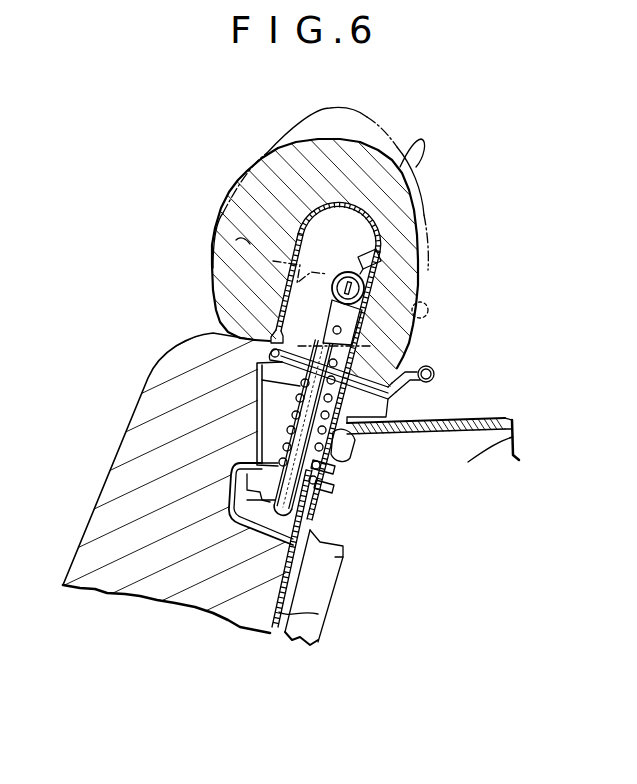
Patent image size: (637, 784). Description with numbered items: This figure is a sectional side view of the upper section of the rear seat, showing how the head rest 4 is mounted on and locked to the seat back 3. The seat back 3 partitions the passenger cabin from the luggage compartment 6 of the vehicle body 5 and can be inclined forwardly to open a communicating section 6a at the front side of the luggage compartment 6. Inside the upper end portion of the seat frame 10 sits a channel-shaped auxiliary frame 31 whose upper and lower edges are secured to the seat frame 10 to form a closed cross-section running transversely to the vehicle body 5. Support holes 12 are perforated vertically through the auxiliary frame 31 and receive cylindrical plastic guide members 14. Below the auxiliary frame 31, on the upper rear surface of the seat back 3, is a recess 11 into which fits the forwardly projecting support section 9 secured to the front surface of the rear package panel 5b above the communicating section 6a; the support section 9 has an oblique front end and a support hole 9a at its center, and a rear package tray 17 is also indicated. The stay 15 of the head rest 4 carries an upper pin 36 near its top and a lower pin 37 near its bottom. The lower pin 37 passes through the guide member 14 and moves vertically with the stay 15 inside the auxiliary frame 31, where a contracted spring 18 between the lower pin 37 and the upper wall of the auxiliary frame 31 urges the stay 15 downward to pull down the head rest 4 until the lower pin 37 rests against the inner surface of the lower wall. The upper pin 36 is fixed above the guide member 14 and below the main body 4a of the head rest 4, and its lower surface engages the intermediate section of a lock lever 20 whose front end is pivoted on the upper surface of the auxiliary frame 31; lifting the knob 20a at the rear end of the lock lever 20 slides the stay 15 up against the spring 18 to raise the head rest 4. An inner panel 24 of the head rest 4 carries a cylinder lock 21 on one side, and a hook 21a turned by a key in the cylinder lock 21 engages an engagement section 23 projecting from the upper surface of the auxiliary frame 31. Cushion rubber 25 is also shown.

The seat back 3 is at (86, 486).
The head rest 4 is at (258, 151).
The main body of the head rest 4a is at (421, 139).
The vehicle body 5 is at (518, 414).
The rear package panel 5b is at (335, 496).
The luggage compartment 6 is at (518, 445).
The communicating section 6a is at (318, 594).
The support section 9 is at (240, 483).
The support hole 9a is at (290, 522).
The seat frame 10 is at (282, 614).
The recess 11 is at (332, 563).
The support holes 12 is at (292, 290).
The guide member 14 is at (338, 466).
The stay 15 is at (240, 345).
The rear package tray 17 is at (498, 418).
The spring 18 is at (288, 430).
The lock lever 20 is at (430, 304).
The knob 20a is at (435, 374).
The cylinder lock 21 is at (345, 270).
The hook 21a is at (242, 245).
The engagement section 23 is at (333, 326).
The inner panel 24 is at (316, 208).
The cushion rubber 25 is at (356, 442).
The auxiliary frame 31 is at (213, 335).
The upper pin 36 is at (430, 348).
The lower pin 37 is at (332, 484).